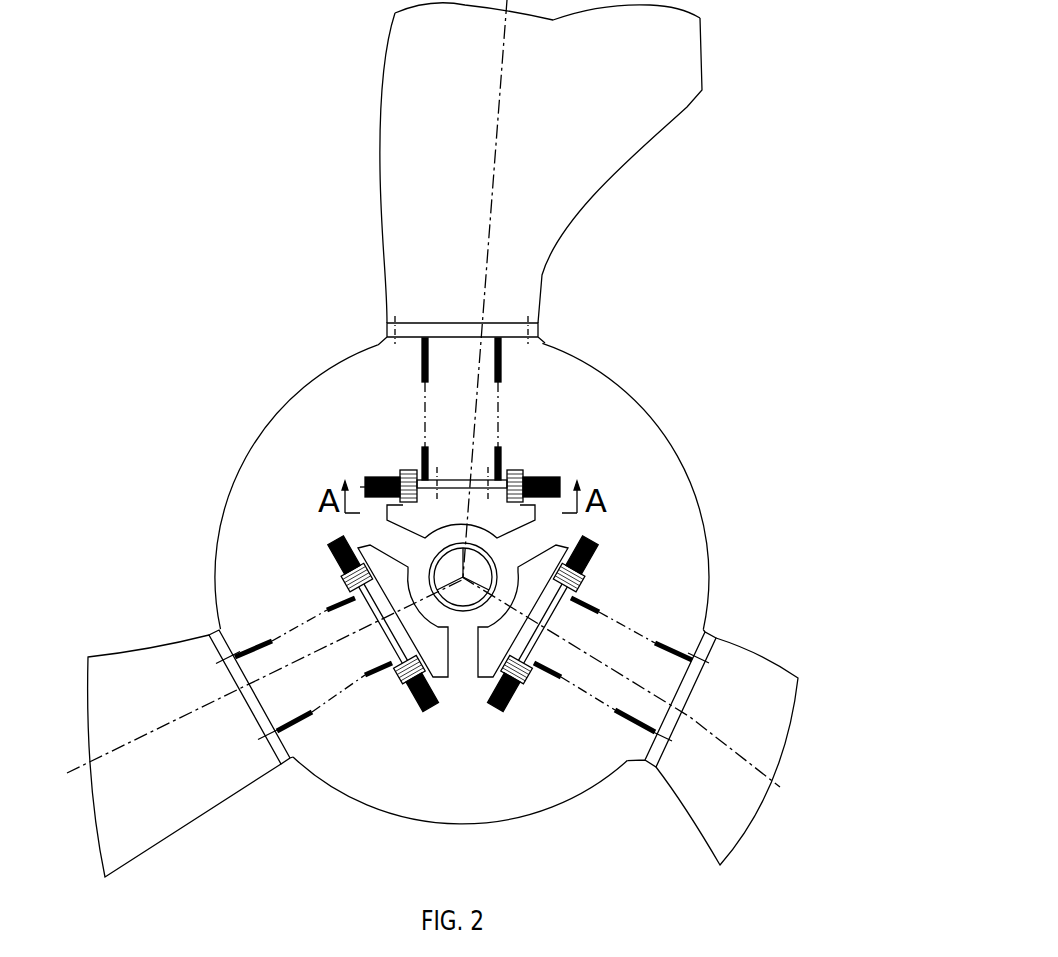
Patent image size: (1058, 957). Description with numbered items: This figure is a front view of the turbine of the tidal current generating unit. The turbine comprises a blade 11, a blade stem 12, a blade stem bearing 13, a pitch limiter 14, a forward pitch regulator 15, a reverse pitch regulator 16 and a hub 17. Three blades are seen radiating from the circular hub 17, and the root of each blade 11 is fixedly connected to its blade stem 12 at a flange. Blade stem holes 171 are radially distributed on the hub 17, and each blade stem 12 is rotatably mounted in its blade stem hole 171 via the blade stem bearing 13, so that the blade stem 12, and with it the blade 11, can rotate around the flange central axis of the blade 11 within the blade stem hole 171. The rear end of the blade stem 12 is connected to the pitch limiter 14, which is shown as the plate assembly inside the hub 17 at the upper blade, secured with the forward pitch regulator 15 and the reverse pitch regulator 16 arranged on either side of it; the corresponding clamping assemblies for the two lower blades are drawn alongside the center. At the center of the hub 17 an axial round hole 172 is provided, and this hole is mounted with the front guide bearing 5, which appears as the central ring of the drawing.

The front guide bearing 5 is at (372, 545).
The blade 11 is at (432, 237).
The blade stem 12 is at (425, 335).
The blade stem bearing 13 is at (425, 445).
The pitch limiter 14 is at (437, 482).
The forward pitch regulator 15 is at (552, 475).
The reverse pitch regulator 16 is at (365, 478).
The hub 17 is at (555, 385).
The blade stem hole 171 is at (618, 623).
The axial round hole 172 is at (490, 552).